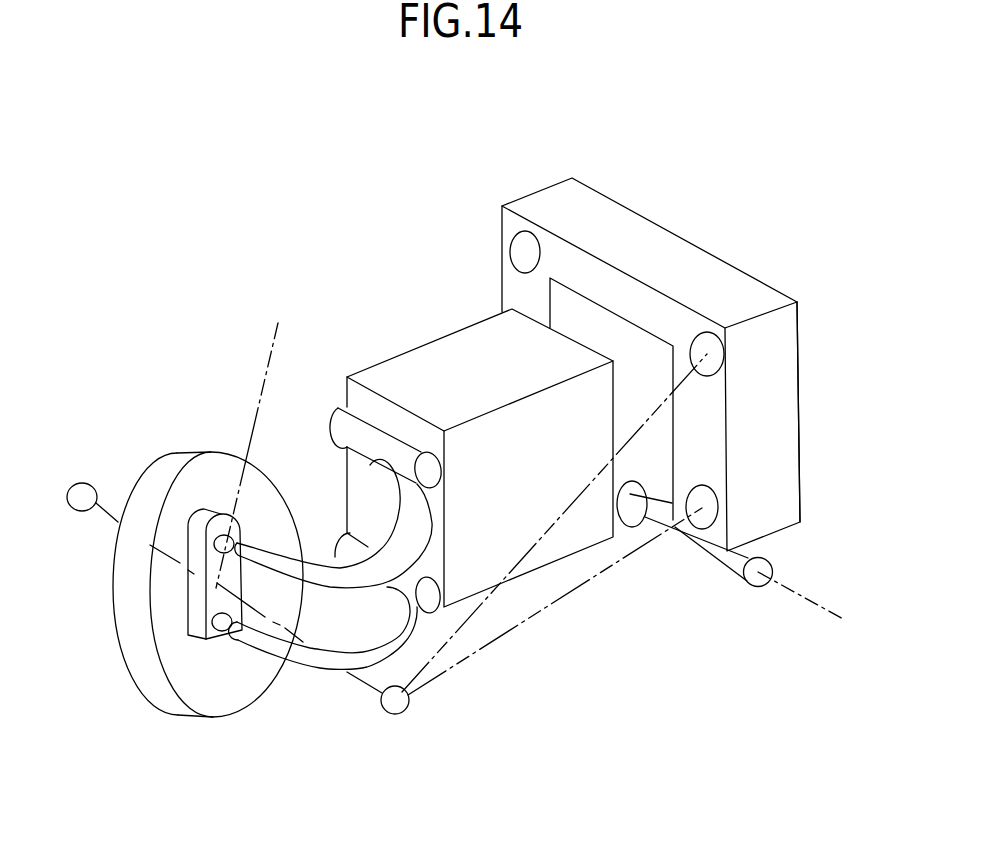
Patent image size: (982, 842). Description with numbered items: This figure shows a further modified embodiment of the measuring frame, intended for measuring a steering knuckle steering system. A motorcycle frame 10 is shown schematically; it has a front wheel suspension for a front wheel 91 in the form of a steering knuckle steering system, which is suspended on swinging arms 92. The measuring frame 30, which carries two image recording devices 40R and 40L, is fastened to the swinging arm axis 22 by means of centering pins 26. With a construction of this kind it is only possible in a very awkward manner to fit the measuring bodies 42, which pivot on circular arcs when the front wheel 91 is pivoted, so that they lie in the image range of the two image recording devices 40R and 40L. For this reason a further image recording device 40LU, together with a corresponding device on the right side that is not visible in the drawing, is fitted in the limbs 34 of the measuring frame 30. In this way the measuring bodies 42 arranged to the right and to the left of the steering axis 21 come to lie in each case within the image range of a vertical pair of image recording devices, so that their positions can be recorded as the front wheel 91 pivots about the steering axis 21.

The motorcycle frame 10 is at (567, 540).
The steering axis 21 is at (275, 355).
The swinging arm axis 22 is at (827, 608).
The centering pins 26 is at (731, 566).
The measuring frame 30 is at (697, 243).
The limbs 34 is at (775, 439).
The image recording device 40R is at (522, 247).
The image recording device 40L is at (710, 360).
The image recording device 40LU is at (717, 513).
The measuring bodies 42 is at (406, 707).
The front wheel 91 is at (175, 463).
The swinging arms 92 is at (330, 660).